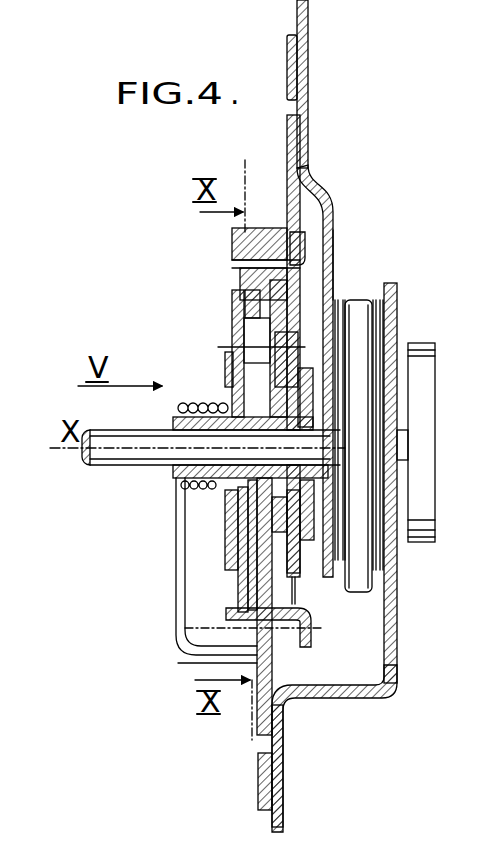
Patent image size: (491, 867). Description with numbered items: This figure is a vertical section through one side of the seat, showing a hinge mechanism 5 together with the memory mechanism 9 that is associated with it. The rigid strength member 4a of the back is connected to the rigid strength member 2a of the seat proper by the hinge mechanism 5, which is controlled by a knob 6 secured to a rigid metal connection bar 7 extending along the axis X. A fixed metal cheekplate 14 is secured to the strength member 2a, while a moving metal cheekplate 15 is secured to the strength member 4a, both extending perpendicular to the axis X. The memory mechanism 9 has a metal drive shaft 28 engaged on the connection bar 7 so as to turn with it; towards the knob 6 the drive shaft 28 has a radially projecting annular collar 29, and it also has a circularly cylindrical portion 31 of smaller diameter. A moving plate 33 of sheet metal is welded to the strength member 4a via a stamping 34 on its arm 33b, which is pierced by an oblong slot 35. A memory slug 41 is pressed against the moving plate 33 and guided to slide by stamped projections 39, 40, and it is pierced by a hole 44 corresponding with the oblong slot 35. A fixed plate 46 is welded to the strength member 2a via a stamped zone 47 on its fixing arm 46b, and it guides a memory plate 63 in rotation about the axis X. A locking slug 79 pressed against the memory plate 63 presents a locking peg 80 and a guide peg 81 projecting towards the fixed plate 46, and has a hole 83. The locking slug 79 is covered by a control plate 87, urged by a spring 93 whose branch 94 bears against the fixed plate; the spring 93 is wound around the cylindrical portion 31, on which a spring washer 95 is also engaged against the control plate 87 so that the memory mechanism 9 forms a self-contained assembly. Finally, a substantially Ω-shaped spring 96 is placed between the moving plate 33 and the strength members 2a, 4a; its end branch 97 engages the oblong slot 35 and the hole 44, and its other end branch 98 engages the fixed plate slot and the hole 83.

The rigid strength member of the seat proper 2a is at (388, 696).
The rigid strength member of the back 4a is at (308, 16).
The hinge mechanism 5 is at (356, 300).
The knob 6 is at (416, 346).
The connection bar 7 is at (112, 432).
The memory mechanism 9 is at (230, 262).
The fixed cheekplate 14 is at (387, 308).
The moving cheekplate 15 is at (338, 300).
The drive shaft 28 is at (230, 398).
The annular collar 29 is at (272, 500).
The circularly cylindrical portion 31 is at (232, 472).
The moving plate 33 is at (288, 42).
The arm 33b is at (287, 66).
The stamping 34 is at (300, 120).
The oblong slot 35 is at (303, 268).
The stamped projection 39 is at (300, 530).
The stamped projection 40 is at (300, 380).
The memory slug 41 is at (270, 226).
The hole 44 is at (262, 258).
The fixed plate 46 is at (256, 788).
The fixing arm 46b is at (260, 762).
The stamped zone 47 is at (283, 756).
The memory plate 63 is at (252, 602).
The locking slug 79 is at (252, 588).
The locking peg 80 is at (247, 332).
The guide peg 81 is at (258, 520).
The hole 83 is at (235, 624).
The control plate 87 is at (228, 360).
The spring 93 is at (228, 484).
The branch of spring 94 is at (202, 655).
The spring washer 95 is at (218, 408).
The Ω-shaped spring 96 is at (300, 246).
The end branch of spring 97 is at (232, 270).
The end branch of spring 98 is at (280, 614).